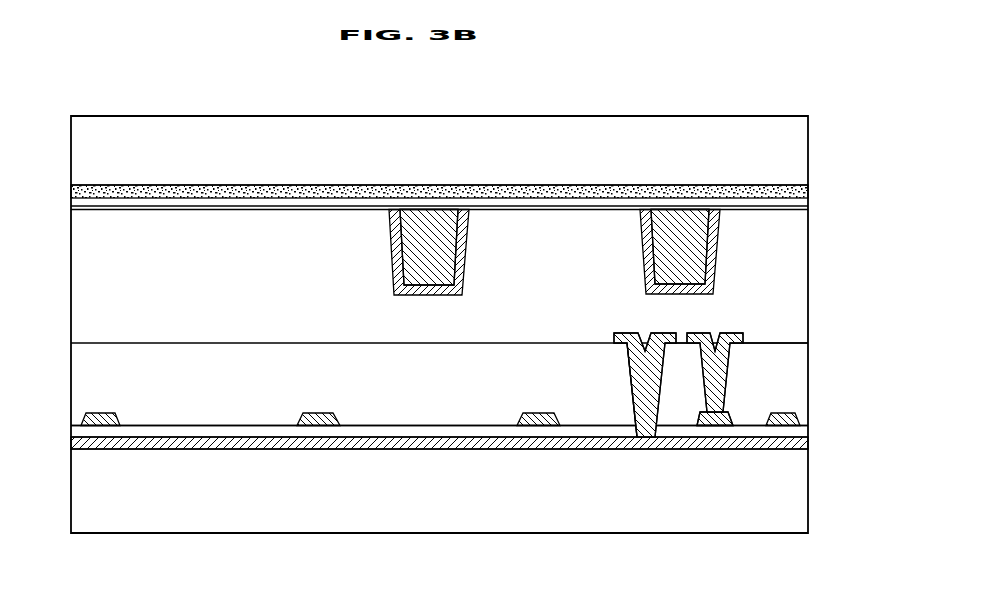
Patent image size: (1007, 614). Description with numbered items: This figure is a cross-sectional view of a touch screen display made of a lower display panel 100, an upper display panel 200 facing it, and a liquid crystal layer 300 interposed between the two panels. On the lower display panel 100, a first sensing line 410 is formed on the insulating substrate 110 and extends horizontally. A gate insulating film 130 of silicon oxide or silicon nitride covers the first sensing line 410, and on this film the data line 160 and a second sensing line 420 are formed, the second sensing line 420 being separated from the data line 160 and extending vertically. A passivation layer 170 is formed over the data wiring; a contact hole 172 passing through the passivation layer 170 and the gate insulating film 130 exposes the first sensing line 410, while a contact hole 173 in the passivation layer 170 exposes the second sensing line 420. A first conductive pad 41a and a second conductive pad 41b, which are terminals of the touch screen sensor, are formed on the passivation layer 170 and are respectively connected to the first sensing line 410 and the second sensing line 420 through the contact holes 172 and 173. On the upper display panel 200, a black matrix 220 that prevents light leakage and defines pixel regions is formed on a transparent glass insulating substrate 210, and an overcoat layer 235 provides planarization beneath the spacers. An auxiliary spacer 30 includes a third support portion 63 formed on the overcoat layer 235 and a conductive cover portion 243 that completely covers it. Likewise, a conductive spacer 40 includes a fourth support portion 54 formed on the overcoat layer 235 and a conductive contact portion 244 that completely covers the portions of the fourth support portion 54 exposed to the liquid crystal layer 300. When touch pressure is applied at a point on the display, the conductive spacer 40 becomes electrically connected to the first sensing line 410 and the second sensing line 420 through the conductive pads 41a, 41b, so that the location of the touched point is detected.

The lower display panel 100 is at (141, 550).
The insulating substrate 110 is at (800, 500).
The gate insulating film 130 is at (800, 431).
The data line 160 is at (800, 415).
The passivation layer 170 is at (800, 388).
The contact hole 172 is at (633, 412).
The contact hole 173 is at (728, 367).
The upper display panel 200 is at (117, 101).
The insulating substrate 210 is at (800, 138).
The black matrix 220 is at (800, 190).
The overcoat layer 235 is at (800, 206).
The conductive cover portion 243 is at (398, 265).
The conductive contact portion 244 is at (710, 263).
The auxiliary spacer 30 is at (394, 253).
The liquid crystal layer 300 is at (80, 294).
The conductive spacer 40 is at (714, 252).
The first sensing line 410 is at (800, 445).
The first conductive pad 41a is at (625, 333).
The second conductive pad 41b is at (735, 333).
The second sensing line 420 is at (715, 413).
The fourth support portion 54 is at (695, 238).
The third support portion 63 is at (413, 242).